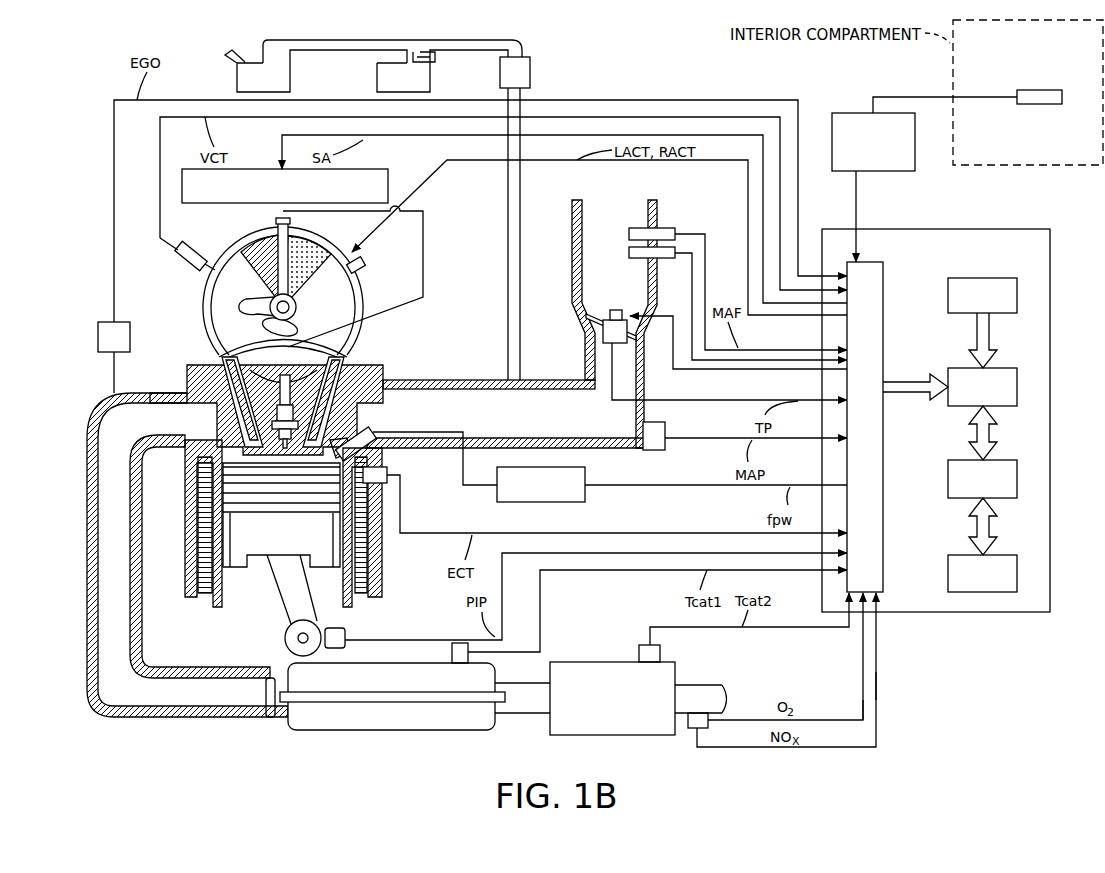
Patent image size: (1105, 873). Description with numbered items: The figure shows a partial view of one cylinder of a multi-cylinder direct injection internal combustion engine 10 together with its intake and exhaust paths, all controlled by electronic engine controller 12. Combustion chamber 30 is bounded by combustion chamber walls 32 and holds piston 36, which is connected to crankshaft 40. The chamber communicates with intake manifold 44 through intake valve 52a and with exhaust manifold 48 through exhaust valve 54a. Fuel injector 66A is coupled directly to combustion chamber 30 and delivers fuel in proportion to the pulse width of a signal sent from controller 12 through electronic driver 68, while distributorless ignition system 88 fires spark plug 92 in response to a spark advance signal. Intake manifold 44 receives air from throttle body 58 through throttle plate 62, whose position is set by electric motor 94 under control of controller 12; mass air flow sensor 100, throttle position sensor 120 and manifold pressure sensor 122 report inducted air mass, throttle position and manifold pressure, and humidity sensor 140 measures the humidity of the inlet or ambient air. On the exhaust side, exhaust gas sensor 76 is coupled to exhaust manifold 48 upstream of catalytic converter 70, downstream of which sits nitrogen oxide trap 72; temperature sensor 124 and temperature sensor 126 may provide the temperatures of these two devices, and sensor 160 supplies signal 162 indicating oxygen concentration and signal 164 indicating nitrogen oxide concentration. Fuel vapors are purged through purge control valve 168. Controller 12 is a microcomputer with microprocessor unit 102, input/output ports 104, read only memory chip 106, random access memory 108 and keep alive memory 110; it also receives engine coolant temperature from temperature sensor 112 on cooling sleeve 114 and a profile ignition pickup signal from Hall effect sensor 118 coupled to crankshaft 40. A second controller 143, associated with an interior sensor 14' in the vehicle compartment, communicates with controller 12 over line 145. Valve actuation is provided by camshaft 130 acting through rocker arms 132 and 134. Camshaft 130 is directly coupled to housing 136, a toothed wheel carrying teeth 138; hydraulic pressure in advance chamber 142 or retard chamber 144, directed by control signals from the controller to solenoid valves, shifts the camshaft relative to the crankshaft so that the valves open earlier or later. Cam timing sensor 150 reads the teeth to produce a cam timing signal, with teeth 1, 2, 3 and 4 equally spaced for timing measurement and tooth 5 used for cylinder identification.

The tooth 1 is at (278, 222).
The tooth 2 is at (363, 272).
The tooth 3 is at (302, 385).
The tooth 4 is at (210, 342).
The tooth 5 is at (210, 266).
The direct injection internal combustion engine 10 is at (416, 309).
The electronic engine controller 12 is at (936, 399).
The interior compartment component 14' is at (1039, 74).
The combustion chamber 30 is at (253, 457).
The combustion chamber walls 32 is at (222, 605).
The piston 36 is at (267, 543).
The crankshaft 40 is at (288, 645).
The intake manifold 44 is at (535, 425).
The exhaust manifold 48 is at (88, 483).
The intake valve 52a is at (340, 428).
The exhaust valve 54a is at (237, 430).
The throttle body 58 is at (603, 367).
The throttle plate 62 is at (603, 317).
The fuel injector 66A is at (380, 432).
The electronic driver 68 is at (585, 470).
The catalytic converter 70 is at (383, 663).
The NOx trap 72 is at (580, 662).
The exhaust gas sensor 76 is at (104, 322).
The distributorless ignition system 88 is at (390, 173).
The spark plug 92 is at (275, 385).
The electric motor 94 is at (616, 310).
The mass air flow sensor 100 is at (660, 227).
The microprocessor unit 102 is at (1000, 368).
The input/output ports 104 is at (883, 286).
The read only memory chip 106 is at (1000, 278).
The random access memory 108 is at (1000, 460).
The keep alive memory 110 is at (1000, 555).
The temperature sensor 112 is at (388, 475).
The cooling sleeve 114 is at (368, 567).
The Hall effect sensor 118 is at (345, 635).
The throttle position sensor 120 is at (603, 333).
The manifold pressure sensor 122 is at (665, 430).
The temperature sensor 124 is at (452, 652).
The temperature sensor 126 is at (660, 655).
The camshaft 130 is at (247, 303).
The rocker arm 132 is at (220, 357).
The rocker arm 134 is at (348, 355).
The housing 136 is at (205, 315).
The teeth 138 is at (364, 260).
The humidity sensor 140 is at (629, 252).
The advance chamber 142 is at (315, 250).
The second controller 143 is at (873, 165).
The retard chamber 144 is at (248, 250).
The line 145 is at (856, 195).
The cam timing sensor 150 is at (180, 263).
The sensor 160 is at (290, 80).
The signal 162 is at (863, 700).
The signal 164 is at (430, 78).
The purge control valve 168 is at (530, 72).